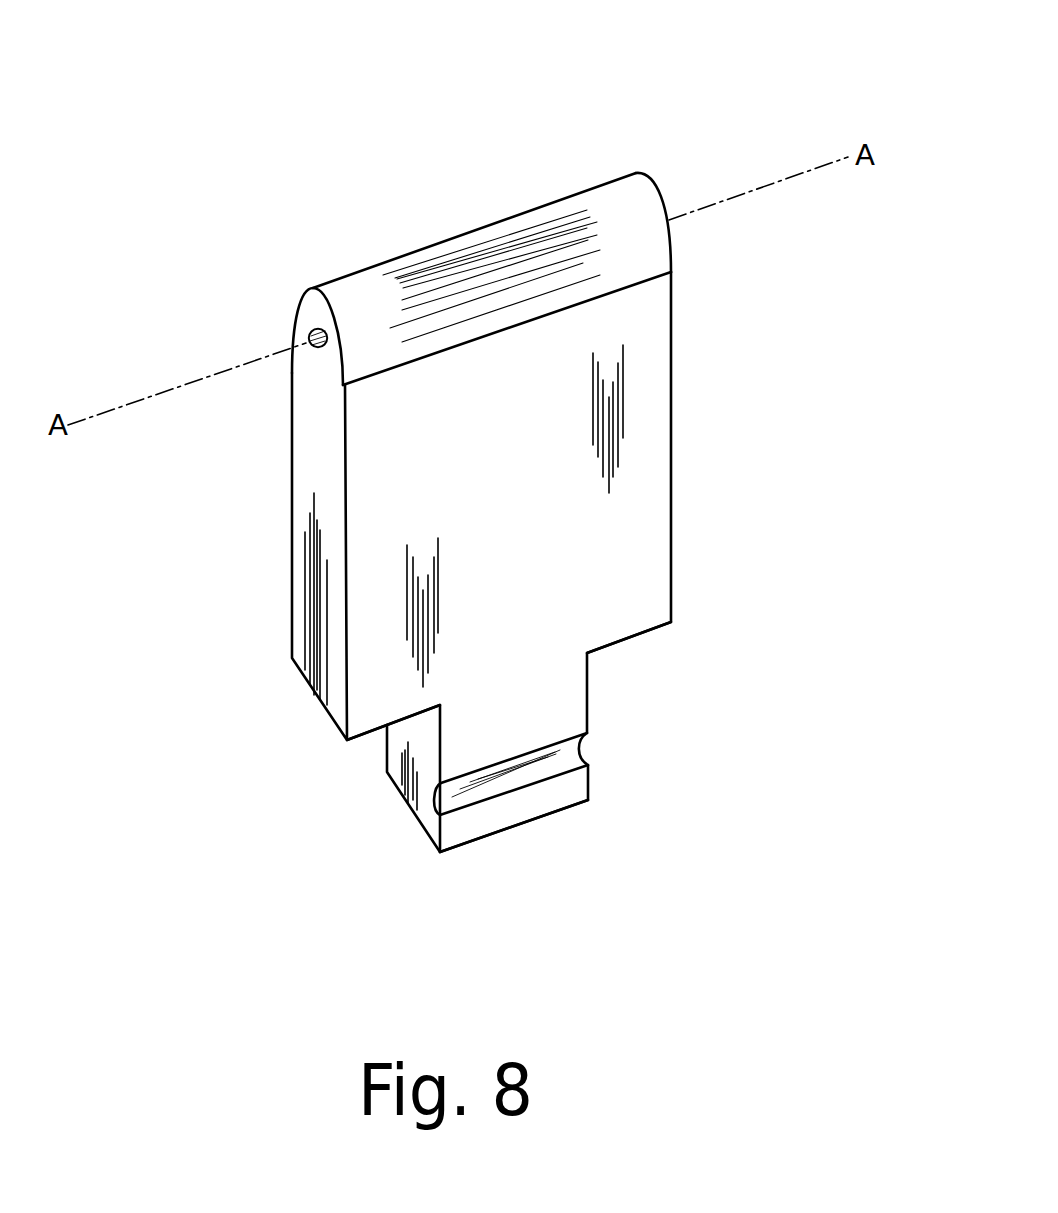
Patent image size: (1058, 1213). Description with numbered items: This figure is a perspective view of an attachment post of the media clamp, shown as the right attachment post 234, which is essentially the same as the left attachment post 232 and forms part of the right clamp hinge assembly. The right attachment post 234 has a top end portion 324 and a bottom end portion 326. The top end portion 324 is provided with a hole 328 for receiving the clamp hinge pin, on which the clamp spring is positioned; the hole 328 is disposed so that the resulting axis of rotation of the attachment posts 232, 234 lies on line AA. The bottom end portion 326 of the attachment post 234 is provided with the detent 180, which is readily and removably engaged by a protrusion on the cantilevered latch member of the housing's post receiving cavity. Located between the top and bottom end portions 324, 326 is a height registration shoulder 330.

The top end portion 324 is at (492, 222).
The hole 328 is at (309, 337).
The left attachment post 232 is at (509, 454).
The right attachment post 234 is at (563, 454).
The height registration shoulder 330 is at (360, 736).
The bottom end portion 326 is at (529, 827).
The detent 180 is at (448, 797).